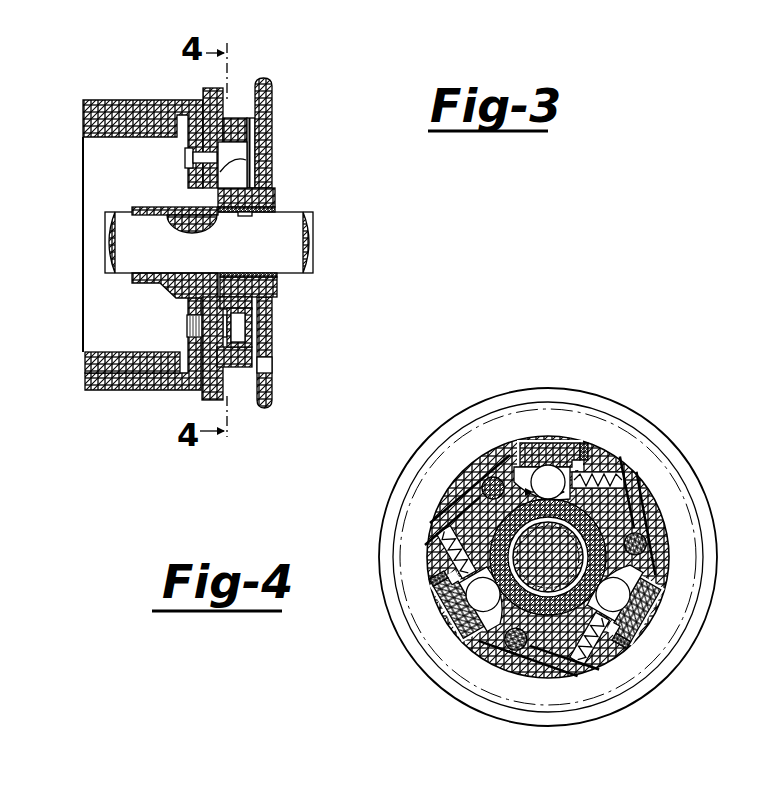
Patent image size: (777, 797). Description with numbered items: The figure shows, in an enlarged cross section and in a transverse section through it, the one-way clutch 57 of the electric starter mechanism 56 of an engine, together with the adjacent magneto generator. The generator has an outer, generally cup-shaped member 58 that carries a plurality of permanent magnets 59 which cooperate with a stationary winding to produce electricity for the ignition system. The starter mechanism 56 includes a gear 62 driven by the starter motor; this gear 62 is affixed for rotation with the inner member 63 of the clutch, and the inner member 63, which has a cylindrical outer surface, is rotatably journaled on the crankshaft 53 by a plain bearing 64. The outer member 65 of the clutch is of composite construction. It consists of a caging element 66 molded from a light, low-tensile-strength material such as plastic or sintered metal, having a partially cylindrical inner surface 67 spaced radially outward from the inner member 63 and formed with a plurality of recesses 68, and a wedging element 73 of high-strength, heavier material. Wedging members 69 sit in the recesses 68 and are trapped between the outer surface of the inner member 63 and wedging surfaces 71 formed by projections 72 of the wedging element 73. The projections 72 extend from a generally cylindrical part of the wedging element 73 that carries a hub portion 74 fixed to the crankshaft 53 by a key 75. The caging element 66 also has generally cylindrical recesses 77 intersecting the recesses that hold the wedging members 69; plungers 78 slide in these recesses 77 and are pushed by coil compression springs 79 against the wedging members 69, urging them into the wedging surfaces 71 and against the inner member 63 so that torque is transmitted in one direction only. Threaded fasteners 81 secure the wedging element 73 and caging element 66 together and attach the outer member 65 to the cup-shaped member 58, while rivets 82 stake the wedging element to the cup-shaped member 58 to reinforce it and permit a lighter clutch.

In FIG. 3, the crankshaft 53 is at (300, 275).
In FIG. 4, the crankshaft 53 is at (553, 617).
In FIG. 3, the electric starter mechanism 56 is at (284, 124).
In FIG. 3, the one-way clutch 57 is at (238, 410).
In FIG. 3, the cup-shaped member 58 is at (112, 392).
In FIG. 3, the permanent magnets 59 is at (85, 358).
In FIG. 3, the gear 62 is at (270, 80).
In FIG. 4, the gear 62 is at (616, 398).
In FIG. 3, the inner member 63 is at (283, 196).
In FIG. 4, the inner member 63 is at (567, 670).
In FIG. 3, the plain bearing 64 is at (277, 210).
In FIG. 3, the outer member 65 is at (203, 402).
In FIG. 4, the outer member 65 is at (608, 672).
In FIG. 3, the caging element 66 is at (232, 116).
In FIG. 4, the partially cylindrical inner surface 67 is at (612, 528).
In FIG. 4, the recesses 68 is at (487, 445).
In FIG. 3, the wedging members 69 is at (247, 214).
In FIG. 4, the wedging members 69 is at (515, 470).
In FIG. 3, the wedging surfaces 71 is at (236, 147).
In FIG. 4, the wedging surfaces 71 is at (600, 452).
In FIG. 3, the projections 72 is at (246, 118).
In FIG. 4, the projections 72 is at (547, 440).
In FIG. 3, the wedging element 73 is at (206, 88).
In FIG. 3, the hub portion 74 is at (170, 298).
In FIG. 3, the key 75 is at (207, 226).
In FIG. 4, the cylindrical recesses 77 is at (581, 668).
In FIG. 4, the plungers 78 is at (654, 608).
In FIG. 4, the coil compression springs 79 is at (595, 660).
In FIG. 3, the threaded fasteners 81 is at (247, 333).
In FIG. 3, the rivets 82 is at (186, 156).